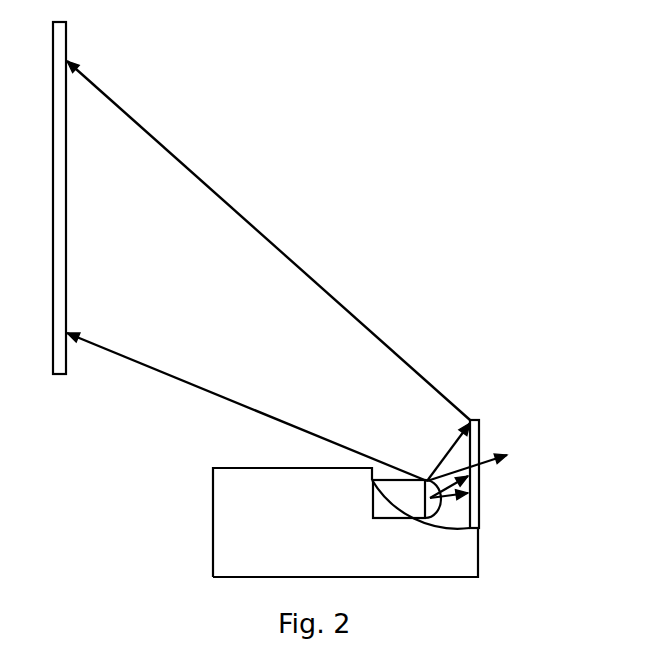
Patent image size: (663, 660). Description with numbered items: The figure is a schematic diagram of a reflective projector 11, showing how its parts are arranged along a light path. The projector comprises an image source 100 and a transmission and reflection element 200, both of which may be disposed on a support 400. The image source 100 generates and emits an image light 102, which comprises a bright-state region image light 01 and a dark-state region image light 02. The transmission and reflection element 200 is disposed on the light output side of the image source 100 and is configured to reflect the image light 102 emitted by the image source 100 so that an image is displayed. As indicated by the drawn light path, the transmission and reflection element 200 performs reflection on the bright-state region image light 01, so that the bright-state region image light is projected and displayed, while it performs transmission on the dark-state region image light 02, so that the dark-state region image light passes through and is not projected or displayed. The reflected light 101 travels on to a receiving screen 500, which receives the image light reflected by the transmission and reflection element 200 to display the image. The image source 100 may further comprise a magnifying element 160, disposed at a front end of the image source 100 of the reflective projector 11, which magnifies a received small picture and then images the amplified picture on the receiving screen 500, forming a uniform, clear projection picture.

The receiving screen 500 is at (68, 156).
The reflected light 101 is at (125, 357).
The support 400 is at (448, 540).
The magnifying element 160 is at (458, 522).
The image source 100 is at (412, 498).
The image light 102 is at (435, 500).
The transmission and reflection element 200 is at (480, 448).
The bright-state region image light 01 is at (448, 452).
The dark-state region image light 02 is at (467, 477).
The reflective projector 11 is at (102, 488).